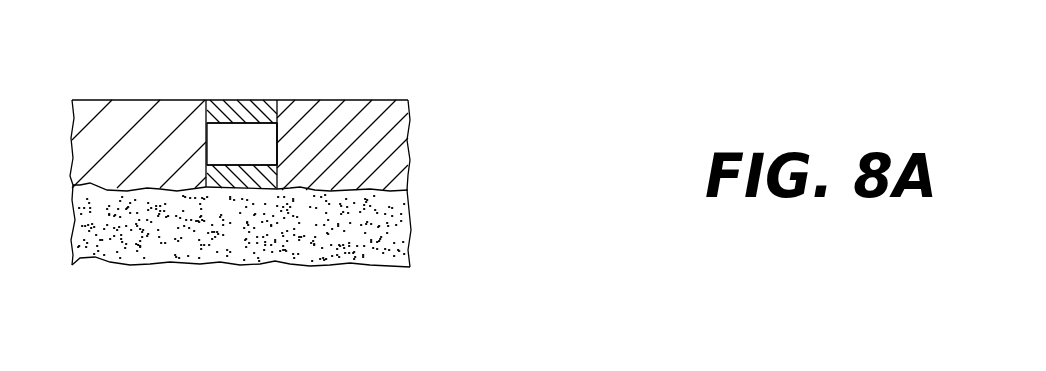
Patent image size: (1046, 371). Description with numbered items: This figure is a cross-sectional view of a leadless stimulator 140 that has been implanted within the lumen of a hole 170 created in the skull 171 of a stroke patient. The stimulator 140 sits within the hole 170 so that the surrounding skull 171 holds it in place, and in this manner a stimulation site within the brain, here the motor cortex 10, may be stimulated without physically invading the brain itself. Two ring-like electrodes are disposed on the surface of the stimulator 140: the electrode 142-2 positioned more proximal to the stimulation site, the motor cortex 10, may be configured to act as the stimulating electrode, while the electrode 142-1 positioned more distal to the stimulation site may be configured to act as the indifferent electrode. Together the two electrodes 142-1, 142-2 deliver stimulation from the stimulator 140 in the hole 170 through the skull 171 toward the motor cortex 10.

The motor cortex 10 is at (387, 232).
The stimulator 140 is at (260, 157).
The ring-like electrode 142-1 is at (245, 106).
The ring-like electrode 142-2 is at (250, 180).
The hole 170 is at (278, 142).
The skull 171 is at (385, 135).